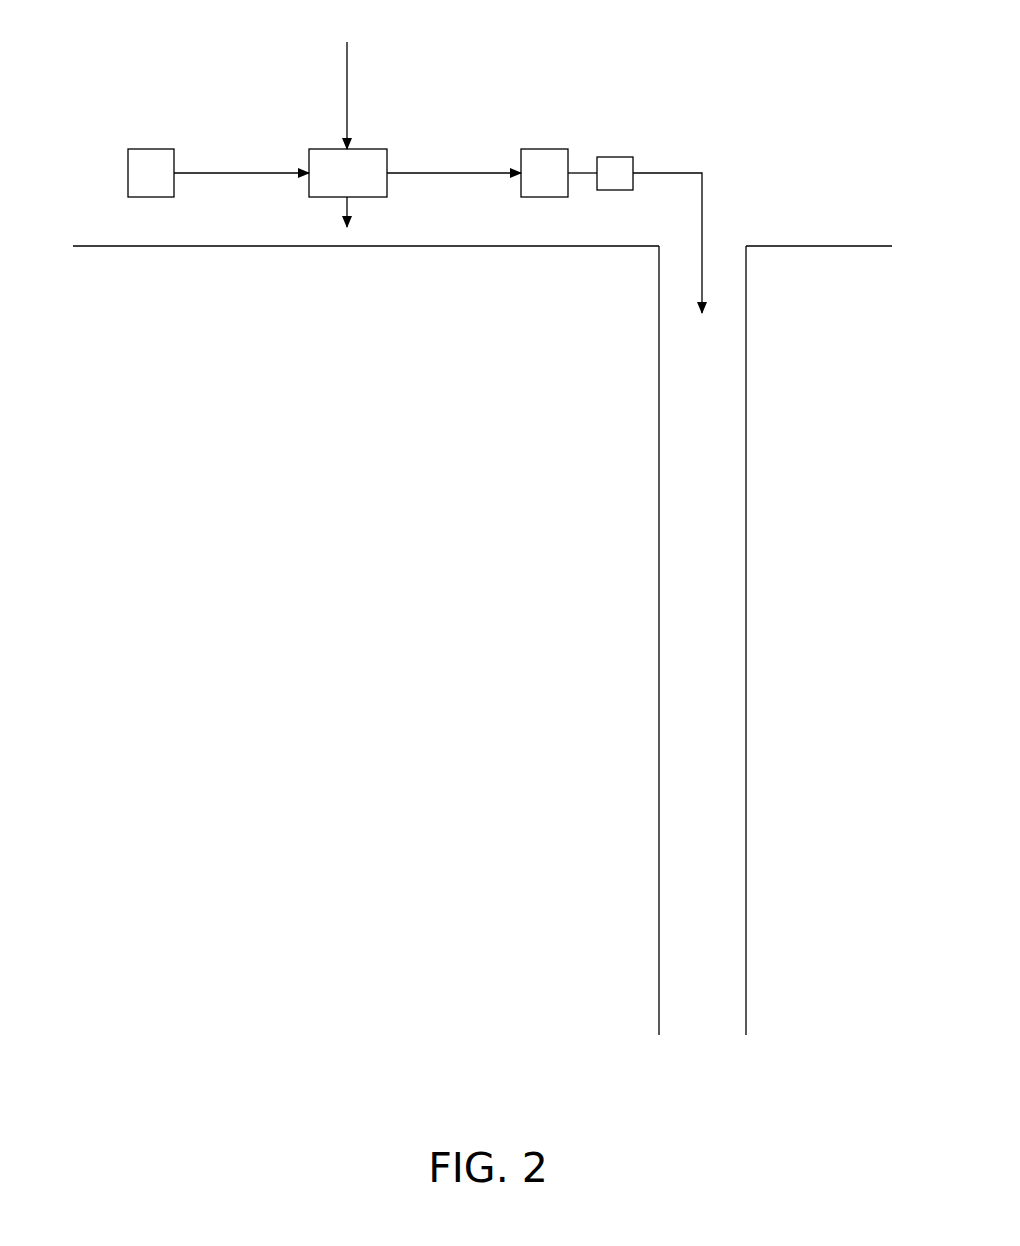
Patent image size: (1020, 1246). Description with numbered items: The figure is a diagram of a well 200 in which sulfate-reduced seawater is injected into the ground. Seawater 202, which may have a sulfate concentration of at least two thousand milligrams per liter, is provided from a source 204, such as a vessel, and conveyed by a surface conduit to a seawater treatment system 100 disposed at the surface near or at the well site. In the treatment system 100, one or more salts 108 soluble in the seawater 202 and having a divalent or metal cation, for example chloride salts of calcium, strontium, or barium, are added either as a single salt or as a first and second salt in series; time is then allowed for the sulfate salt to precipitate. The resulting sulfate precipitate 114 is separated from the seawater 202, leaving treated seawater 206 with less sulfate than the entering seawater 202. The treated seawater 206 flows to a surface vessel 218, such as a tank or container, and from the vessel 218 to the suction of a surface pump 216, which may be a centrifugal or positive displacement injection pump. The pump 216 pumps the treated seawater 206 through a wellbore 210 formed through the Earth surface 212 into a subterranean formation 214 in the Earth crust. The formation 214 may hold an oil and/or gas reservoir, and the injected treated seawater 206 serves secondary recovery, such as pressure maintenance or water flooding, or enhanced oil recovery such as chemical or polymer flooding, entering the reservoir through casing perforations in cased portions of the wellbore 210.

The seawater treatment system 100 is at (319, 149).
The salt 108 is at (348, 82).
The sulfate precipitate 114 is at (342, 205).
The well 200 is at (508, 1132).
The seawater 202 is at (252, 173).
The source 204 is at (151, 148).
The treated seawater 206 is at (446, 173).
The wellbore 210 is at (659, 464).
The Earth surface 212 is at (102, 246).
The subterranean formation 214 is at (590, 390).
The surface pump 216 is at (616, 157).
The surface vessel 218 is at (543, 149).